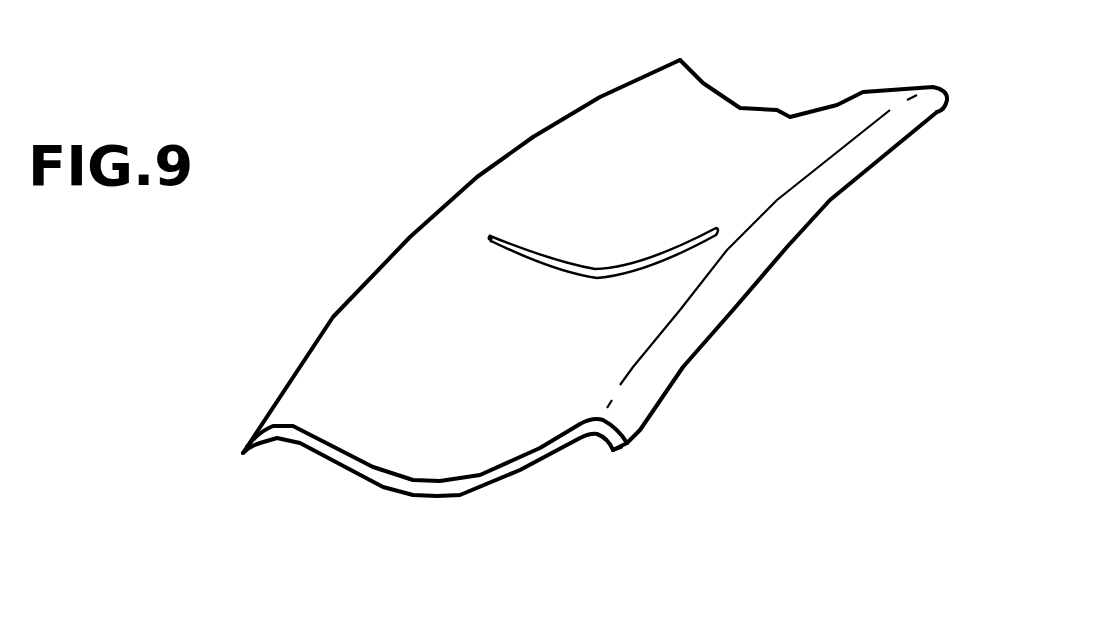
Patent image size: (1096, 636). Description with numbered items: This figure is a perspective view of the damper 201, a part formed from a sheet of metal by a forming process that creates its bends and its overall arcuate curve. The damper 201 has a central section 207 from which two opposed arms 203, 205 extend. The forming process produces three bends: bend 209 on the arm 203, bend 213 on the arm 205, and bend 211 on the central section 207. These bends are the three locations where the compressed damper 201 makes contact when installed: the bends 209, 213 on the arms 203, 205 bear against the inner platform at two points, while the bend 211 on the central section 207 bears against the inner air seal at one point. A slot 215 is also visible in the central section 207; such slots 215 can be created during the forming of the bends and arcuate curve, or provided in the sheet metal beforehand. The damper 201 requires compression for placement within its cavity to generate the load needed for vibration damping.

The damper 201 is at (443, 155).
The arm 203 is at (243, 450).
The arm 205 is at (610, 447).
The central section 207 is at (700, 105).
The bend 209 is at (317, 373).
The bend 211 is at (430, 492).
The bend 213 is at (620, 385).
The slot 215 is at (597, 277).